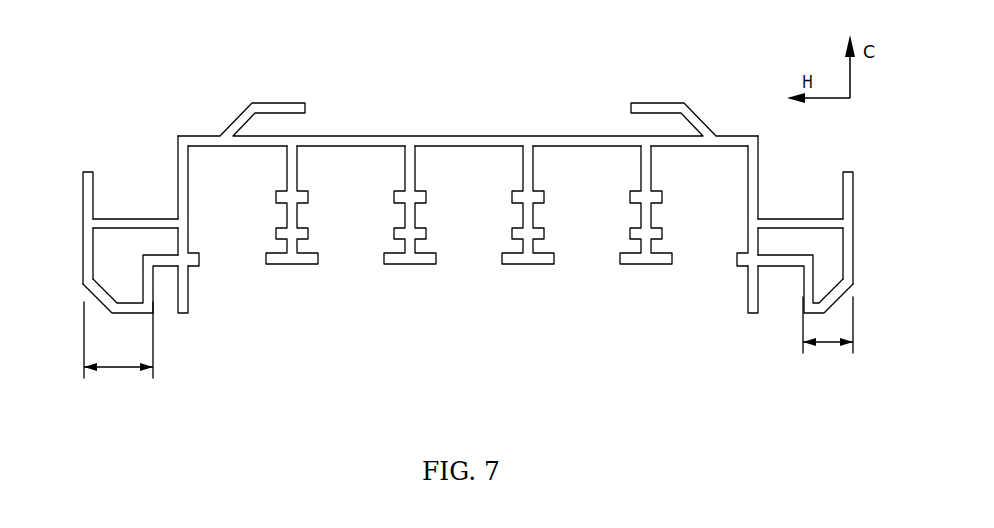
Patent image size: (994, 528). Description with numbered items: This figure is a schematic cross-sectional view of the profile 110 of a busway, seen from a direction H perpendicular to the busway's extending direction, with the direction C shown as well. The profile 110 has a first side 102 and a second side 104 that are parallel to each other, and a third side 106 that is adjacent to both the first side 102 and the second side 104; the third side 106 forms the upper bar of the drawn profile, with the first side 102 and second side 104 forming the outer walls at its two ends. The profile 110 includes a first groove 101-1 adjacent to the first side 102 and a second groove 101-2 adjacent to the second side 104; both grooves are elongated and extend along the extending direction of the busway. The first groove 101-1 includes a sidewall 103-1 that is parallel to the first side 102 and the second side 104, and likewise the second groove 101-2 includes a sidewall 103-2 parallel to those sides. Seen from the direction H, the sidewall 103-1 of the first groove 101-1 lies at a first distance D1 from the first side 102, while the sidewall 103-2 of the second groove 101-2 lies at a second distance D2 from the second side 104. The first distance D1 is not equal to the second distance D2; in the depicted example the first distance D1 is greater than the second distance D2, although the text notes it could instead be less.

The profile 110 is at (210, 67).
The third side 106 is at (510, 137).
The first side 102 is at (83, 230).
The second side 104 is at (853, 237).
The sidewall 103-1 is at (150, 287).
The sidewall 103-2 is at (808, 290).
The first groove 101-1 is at (162, 295).
The second groove 101-2 is at (798, 293).
The first distance D1 is at (120, 368).
The second distance D2 is at (828, 348).